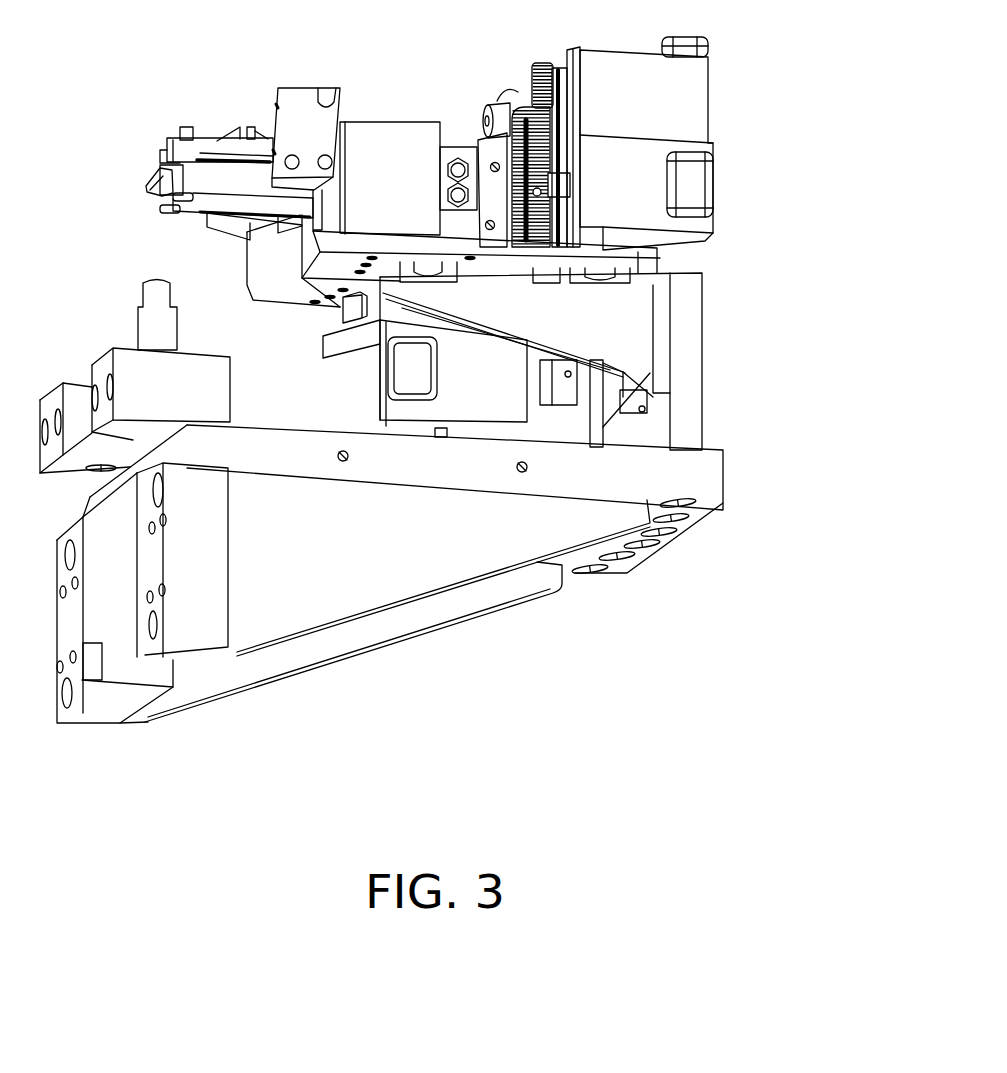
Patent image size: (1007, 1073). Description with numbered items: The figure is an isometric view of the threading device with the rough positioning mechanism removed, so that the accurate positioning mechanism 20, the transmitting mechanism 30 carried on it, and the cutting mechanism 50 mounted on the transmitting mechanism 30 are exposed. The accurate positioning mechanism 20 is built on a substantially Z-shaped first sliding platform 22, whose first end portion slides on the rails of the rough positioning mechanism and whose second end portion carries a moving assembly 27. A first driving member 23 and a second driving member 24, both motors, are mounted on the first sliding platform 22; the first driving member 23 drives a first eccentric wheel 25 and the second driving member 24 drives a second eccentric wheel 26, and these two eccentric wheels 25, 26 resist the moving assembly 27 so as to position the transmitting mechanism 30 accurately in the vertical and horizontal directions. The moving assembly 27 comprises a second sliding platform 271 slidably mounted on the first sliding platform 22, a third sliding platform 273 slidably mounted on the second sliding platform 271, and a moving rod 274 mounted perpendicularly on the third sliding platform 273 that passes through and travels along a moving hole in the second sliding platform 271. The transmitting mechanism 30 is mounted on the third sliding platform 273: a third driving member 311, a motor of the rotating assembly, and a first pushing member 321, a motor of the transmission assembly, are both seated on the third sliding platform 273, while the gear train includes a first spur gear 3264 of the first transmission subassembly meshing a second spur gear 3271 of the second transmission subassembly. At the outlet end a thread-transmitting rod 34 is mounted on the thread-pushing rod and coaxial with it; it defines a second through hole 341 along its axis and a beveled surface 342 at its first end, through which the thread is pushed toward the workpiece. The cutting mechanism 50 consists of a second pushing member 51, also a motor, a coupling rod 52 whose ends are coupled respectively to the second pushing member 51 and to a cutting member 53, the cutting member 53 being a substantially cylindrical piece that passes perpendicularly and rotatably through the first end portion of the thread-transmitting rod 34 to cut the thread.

The accurate positioning mechanism 20 is at (819, 283).
The first sliding platform 22 is at (682, 480).
The first driving member 23 is at (463, 403).
The second driving member 24 is at (543, 433).
The first eccentric wheel 25 is at (550, 393).
The second eccentric wheel 26 is at (627, 400).
The moving assembly 27 is at (777, 243).
The second sliding platform 271 is at (633, 312).
The third sliding platform 273 is at (610, 258).
The moving rod 274 is at (560, 350).
The transmitting mechanism 30 is at (498, 76).
The third driving member 311 is at (612, 65).
The first pushing member 321 is at (695, 148).
The first spur gear 3264 is at (450, 153).
The second spur gear 3271 is at (443, 193).
The thread-transmitting rod 34 is at (150, 199).
The second through hole 341 is at (148, 187).
The beveled surface 342 is at (168, 182).
The cutting mechanism 50 is at (212, 25).
The second pushing member 51 is at (277, 97).
The coupling rod 52 is at (218, 147).
The cutting member 53 is at (188, 128).